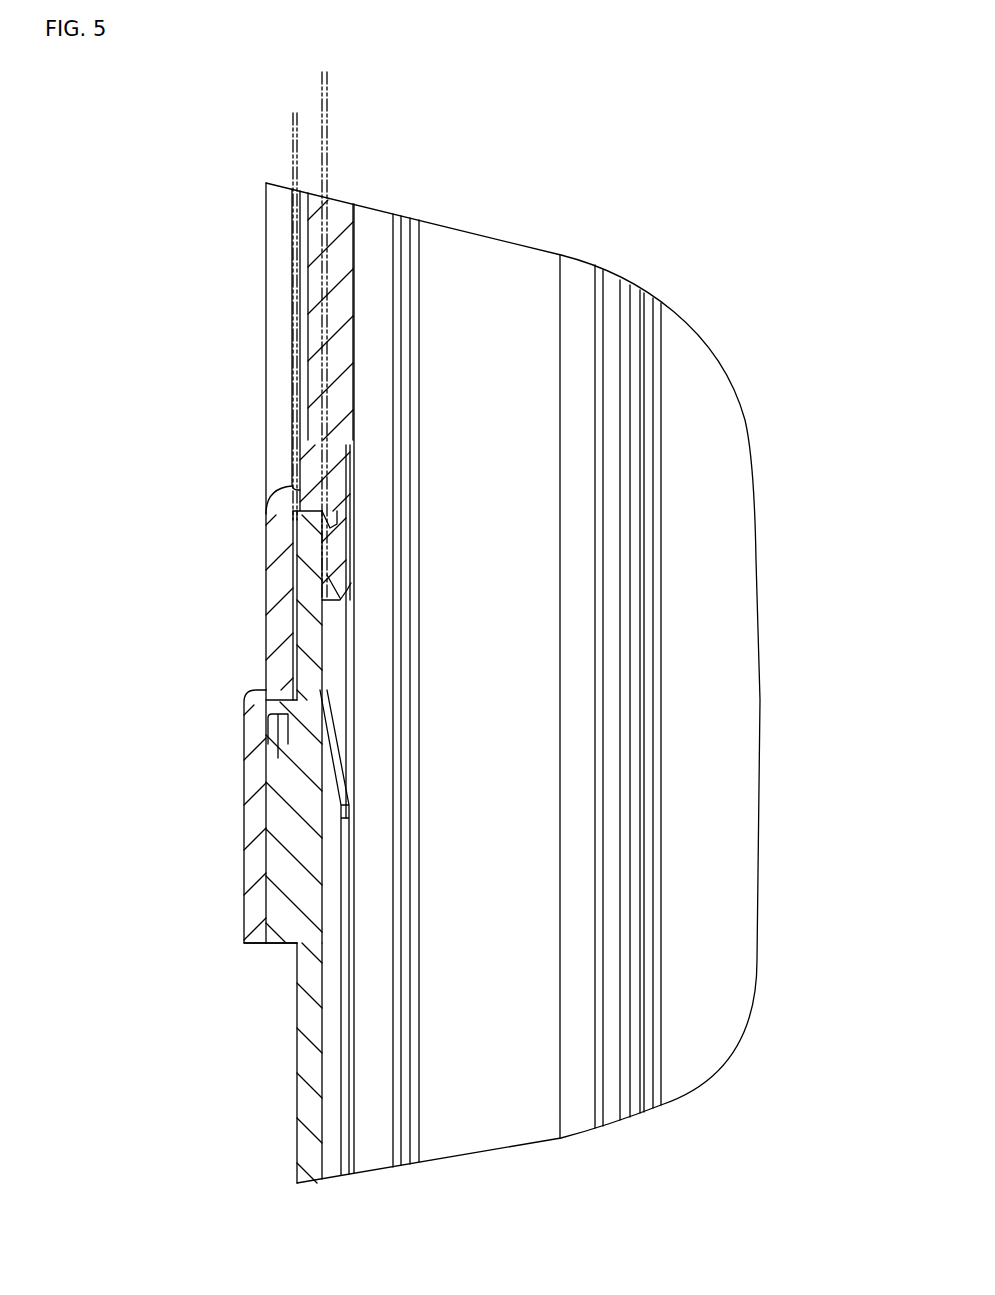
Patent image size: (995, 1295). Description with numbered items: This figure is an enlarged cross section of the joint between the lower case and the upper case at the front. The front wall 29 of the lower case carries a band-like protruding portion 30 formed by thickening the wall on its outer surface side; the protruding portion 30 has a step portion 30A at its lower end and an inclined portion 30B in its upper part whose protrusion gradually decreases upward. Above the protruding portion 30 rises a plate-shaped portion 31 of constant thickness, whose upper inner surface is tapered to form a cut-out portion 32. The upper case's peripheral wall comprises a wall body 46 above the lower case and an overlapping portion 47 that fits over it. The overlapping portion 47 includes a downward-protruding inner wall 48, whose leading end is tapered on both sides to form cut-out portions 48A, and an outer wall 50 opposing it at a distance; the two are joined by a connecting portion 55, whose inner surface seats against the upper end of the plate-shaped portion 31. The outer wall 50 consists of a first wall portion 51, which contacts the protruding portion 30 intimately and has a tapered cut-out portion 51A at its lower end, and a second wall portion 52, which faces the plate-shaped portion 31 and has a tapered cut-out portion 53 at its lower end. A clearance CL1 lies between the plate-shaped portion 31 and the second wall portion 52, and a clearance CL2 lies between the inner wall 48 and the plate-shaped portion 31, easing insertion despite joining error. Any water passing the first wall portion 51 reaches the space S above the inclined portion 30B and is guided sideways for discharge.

The wall body 46 is at (308, 334).
The connecting portion 55 is at (300, 494).
The cut-out portion 32 is at (322, 518).
The inner wall 48 is at (338, 573).
The cut-out portions 48A is at (352, 590).
The overlapping portion 47 is at (122, 580).
The outer wall 50 is at (168, 615).
The second wall portion 52 is at (275, 632).
The first wall portion 51 is at (262, 710).
The space S is at (272, 742).
The inclined portion 30B is at (283, 741).
The plate-shaped portion 31 is at (310, 642).
The protruding portion 30 is at (277, 858).
The cut-out portion 53 is at (296, 710).
The cut-out portion 51A is at (266, 946).
The step portion 30A is at (287, 946).
The front wall 29 is at (302, 1118).
The clearance CL1 is at (298, 115).
The clearance CL2 is at (321, 75).